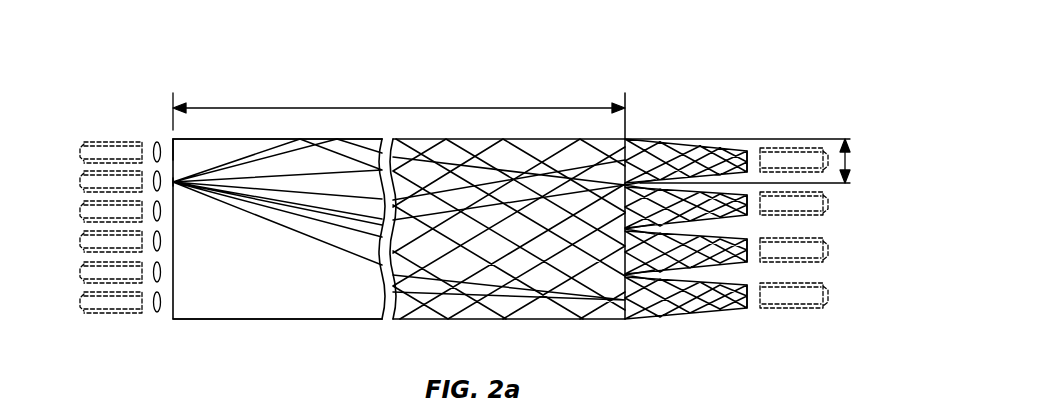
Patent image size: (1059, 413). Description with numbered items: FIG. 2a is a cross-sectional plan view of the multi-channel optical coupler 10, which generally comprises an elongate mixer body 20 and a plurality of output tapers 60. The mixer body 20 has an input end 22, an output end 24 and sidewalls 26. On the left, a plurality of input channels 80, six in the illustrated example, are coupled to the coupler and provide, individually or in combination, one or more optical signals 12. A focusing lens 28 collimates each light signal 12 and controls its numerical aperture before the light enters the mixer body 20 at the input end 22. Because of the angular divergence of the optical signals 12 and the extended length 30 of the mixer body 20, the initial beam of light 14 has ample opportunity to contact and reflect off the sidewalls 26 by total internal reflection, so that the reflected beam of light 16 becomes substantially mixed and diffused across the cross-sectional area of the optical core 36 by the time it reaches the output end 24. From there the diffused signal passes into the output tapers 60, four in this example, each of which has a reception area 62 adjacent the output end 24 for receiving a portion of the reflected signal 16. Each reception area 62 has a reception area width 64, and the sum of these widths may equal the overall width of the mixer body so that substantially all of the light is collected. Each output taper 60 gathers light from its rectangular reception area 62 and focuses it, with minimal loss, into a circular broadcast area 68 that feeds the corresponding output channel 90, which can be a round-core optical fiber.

The multi-channel optical coupler 10 is at (227, 69).
The optical signal 12 is at (180, 190).
The initial beam of light 14 is at (308, 242).
The reflected beam of light 16 is at (602, 312).
The mixer body 20 is at (263, 320).
The input end 22 is at (173, 139).
The output end 24 is at (620, 145).
The sidewalls 26 is at (325, 320).
The focusing lens 28 is at (157, 320).
The extended length 30 is at (399, 98).
The optical core 36 is at (574, 245).
The output tapers 60 is at (708, 312).
The reception area 62 is at (657, 180).
The reception area width 64 is at (852, 158).
The circular broadcast area 68 is at (748, 308).
The input channels 80 is at (100, 318).
The output channels 90 is at (790, 310).